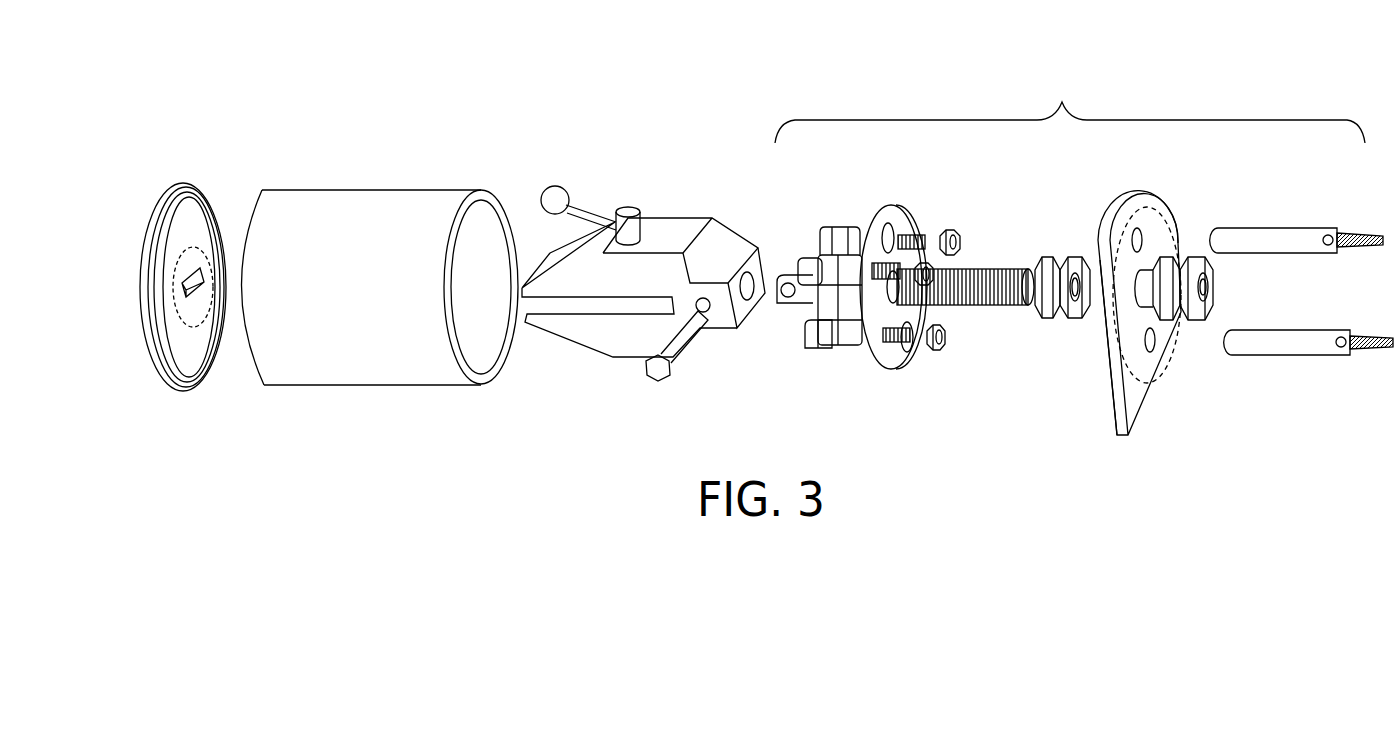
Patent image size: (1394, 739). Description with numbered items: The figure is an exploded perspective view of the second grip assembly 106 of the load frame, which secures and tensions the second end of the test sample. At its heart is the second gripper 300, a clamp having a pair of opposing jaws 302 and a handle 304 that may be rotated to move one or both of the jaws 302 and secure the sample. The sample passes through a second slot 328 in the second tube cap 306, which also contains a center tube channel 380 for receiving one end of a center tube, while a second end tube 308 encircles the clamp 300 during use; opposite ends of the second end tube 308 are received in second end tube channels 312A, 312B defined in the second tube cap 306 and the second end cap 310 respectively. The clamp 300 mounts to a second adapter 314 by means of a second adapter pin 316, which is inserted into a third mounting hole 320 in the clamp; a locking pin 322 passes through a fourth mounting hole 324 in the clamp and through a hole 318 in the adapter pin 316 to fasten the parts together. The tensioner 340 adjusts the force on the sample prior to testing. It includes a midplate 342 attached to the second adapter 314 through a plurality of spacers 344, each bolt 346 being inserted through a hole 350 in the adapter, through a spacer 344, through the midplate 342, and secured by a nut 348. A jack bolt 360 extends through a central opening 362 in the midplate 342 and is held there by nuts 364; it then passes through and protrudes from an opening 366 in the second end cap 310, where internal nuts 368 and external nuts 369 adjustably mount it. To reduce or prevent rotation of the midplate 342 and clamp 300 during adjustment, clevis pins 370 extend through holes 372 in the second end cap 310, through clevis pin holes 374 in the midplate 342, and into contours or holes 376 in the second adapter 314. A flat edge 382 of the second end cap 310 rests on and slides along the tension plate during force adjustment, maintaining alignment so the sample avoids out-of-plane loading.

The second grip assembly 106 is at (542, 72).
The second gripper 300 is at (667, 227).
The opposing jaws 302 is at (562, 325).
The handle 304 is at (555, 186).
The second tube cap 306 is at (174, 205).
The second end tube 308 is at (353, 196).
The second end cap 310 is at (1137, 393).
The second end tube channel 312A is at (196, 178).
The second end tube channel 312B is at (1091, 221).
The second adapter 314 is at (838, 346).
The second adapter pin 316 is at (786, 298).
The hole 318 is at (782, 304).
The third mounting hole 320 is at (765, 262).
The locking pin 322 is at (660, 373).
The fourth mounting hole 324 is at (705, 316).
The second slot 328 is at (200, 309).
The tensioner 340 is at (1062, 100).
The midplate 342 is at (891, 215).
The spacers 344 is at (838, 267).
The bolts 346 is at (882, 262).
The nuts 348 is at (938, 352).
The hole 350 is at (815, 104).
The jack bolt 360 is at (1008, 306).
The central opening 362 is at (886, 301).
The nuts 364 is at (1048, 321).
The opening 366 is at (1144, 262).
The internal nuts 368 is at (1075, 321).
The external nuts 369 is at (1181, 261).
The clevis pins 370 is at (1280, 245).
The holes 372 is at (1137, 227).
The clevis pin holes 374 is at (882, 213).
The contours or holes 376 is at (813, 248).
The center tube channel 380 is at (136, 282).
The flat edge 382 is at (1104, 425).